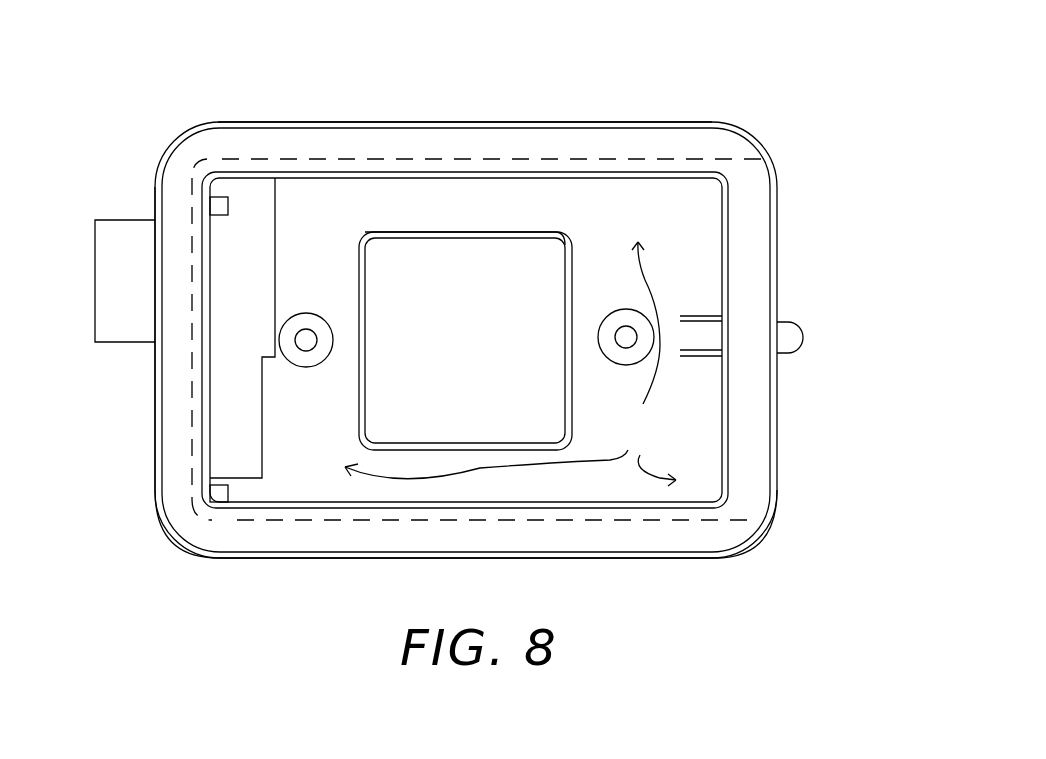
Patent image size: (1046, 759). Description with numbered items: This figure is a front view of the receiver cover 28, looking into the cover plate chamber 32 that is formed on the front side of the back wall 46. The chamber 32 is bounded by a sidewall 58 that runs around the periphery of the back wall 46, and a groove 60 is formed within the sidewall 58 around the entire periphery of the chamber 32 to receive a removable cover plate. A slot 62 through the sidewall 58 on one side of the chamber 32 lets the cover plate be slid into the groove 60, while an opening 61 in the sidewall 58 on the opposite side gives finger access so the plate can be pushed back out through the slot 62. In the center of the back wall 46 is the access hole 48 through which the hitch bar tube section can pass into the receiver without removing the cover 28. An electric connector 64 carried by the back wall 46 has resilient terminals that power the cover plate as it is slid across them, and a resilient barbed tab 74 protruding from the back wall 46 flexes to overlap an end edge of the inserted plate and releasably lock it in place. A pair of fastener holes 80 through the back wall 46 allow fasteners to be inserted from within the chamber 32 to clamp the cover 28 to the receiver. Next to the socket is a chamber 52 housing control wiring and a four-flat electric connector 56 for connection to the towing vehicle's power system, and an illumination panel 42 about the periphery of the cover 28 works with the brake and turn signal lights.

The receiver cover 28 is at (754, 566).
The cover plate chamber 32 is at (656, 444).
The illumination panel 42 is at (755, 226).
The back wall 46 is at (555, 200).
The access hole 48 is at (465, 359).
The chamber 52 is at (256, 264).
The 4-flat electric connector 56 is at (117, 219).
The sidewall 58 is at (650, 122).
The groove 60 is at (336, 163).
The opening 61 is at (213, 498).
The slot 62 is at (755, 440).
The electric connector 64 is at (213, 199).
The resilient barbed tab 74 is at (805, 335).
The fastener holes 80 is at (306, 346).